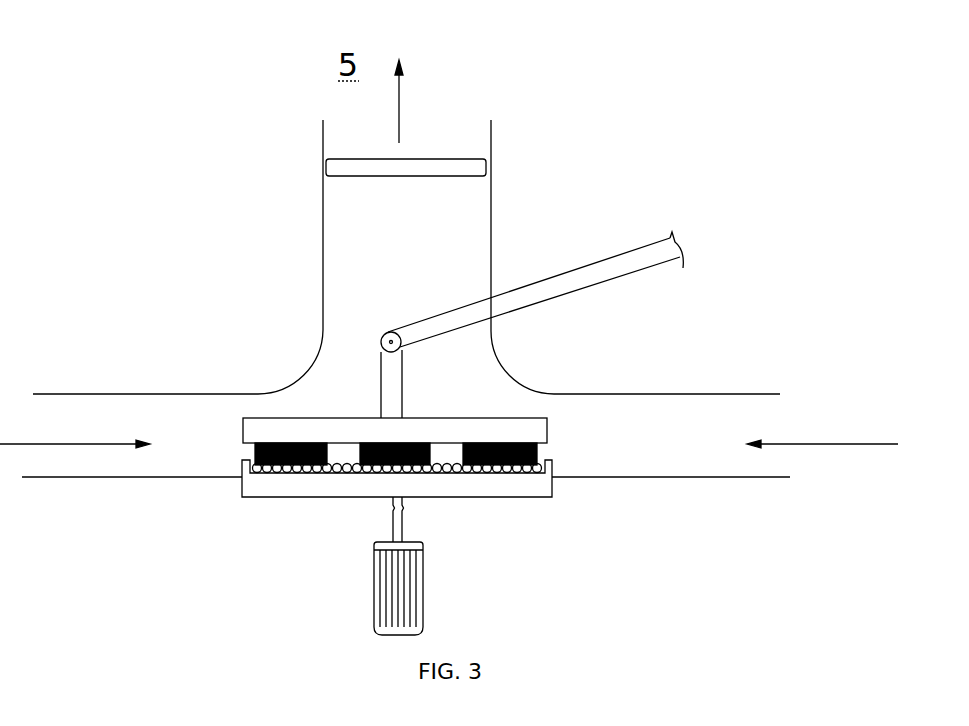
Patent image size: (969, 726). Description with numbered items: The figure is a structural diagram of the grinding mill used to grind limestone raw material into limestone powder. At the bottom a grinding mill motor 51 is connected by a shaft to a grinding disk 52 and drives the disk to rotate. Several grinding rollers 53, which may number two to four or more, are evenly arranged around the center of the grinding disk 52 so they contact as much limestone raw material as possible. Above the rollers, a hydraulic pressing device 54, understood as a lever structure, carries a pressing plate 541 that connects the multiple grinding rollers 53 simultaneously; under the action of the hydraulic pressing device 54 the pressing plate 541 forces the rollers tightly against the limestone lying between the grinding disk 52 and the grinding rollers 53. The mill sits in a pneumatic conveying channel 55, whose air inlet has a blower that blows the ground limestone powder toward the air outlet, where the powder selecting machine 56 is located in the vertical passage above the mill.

The grinding mill motor 51 is at (415, 595).
The grinding disk 52 is at (508, 490).
The grinding rollers 53 is at (295, 470).
The hydraulic pressing device 54 is at (612, 266).
The pressing plate 541 is at (497, 433).
The pneumatic conveying channel 55 is at (632, 440).
The powder selecting machine 56 is at (427, 167).